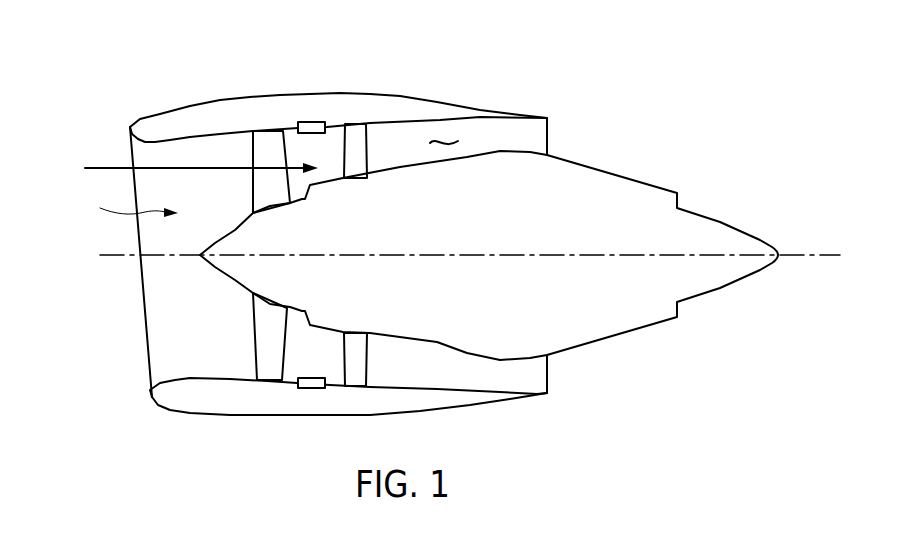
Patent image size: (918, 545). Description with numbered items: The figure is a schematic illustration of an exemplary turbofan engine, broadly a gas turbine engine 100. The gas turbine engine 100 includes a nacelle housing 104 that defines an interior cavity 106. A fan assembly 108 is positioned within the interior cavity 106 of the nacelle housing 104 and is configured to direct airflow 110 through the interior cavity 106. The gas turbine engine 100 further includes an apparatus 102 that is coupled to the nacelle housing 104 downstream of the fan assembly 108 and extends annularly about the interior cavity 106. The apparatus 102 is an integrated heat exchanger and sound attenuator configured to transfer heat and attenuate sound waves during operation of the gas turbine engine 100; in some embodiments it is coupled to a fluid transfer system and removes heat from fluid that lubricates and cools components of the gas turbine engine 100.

The gas turbine engine 100 is at (623, 51).
The apparatus 102 is at (307, 121).
The nacelle housing 104 is at (224, 403).
The interior cavity 106 is at (440, 133).
The fan assembly 108 is at (120, 211).
The airflow 110 is at (103, 167).